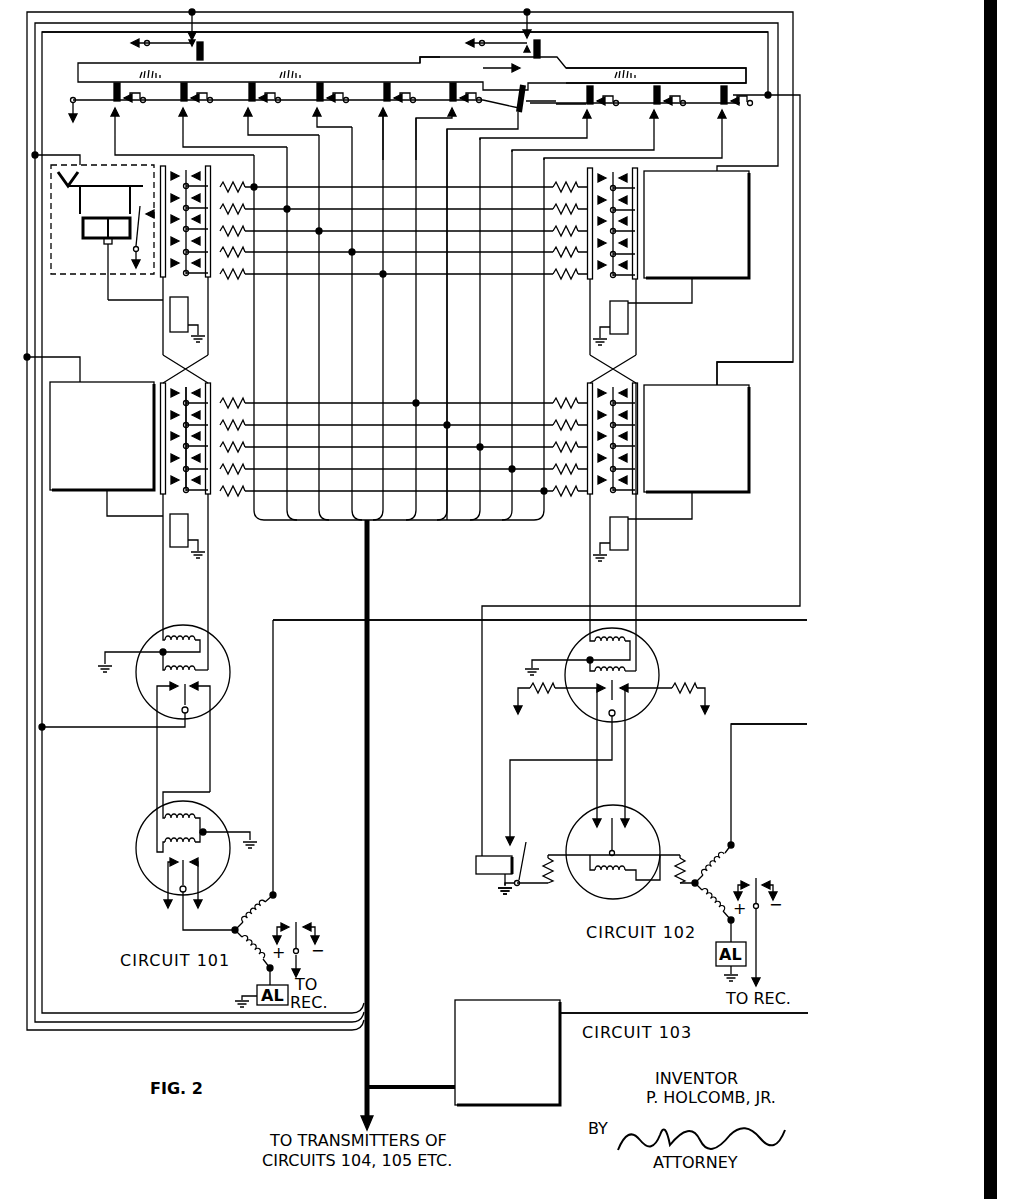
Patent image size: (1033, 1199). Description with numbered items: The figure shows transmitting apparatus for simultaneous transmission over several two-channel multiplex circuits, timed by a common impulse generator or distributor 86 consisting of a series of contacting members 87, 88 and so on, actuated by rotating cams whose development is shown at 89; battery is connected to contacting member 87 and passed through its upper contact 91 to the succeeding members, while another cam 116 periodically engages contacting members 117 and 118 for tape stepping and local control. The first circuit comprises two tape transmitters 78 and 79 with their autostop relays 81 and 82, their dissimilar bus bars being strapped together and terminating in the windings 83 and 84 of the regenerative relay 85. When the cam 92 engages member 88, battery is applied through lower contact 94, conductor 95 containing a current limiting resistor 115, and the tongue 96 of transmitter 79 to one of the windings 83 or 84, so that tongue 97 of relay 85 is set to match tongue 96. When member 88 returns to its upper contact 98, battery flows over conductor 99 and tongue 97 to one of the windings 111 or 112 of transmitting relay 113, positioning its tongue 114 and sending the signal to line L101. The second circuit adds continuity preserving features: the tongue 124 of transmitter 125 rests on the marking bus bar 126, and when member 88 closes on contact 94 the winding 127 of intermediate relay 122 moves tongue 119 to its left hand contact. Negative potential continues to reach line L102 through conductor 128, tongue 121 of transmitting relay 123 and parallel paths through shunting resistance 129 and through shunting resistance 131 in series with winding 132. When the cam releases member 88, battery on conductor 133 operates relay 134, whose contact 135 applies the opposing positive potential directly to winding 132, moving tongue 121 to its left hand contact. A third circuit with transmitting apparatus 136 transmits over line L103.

The tape transmitter 78 is at (212, 283).
The tape transmitter 79 is at (214, 378).
The autostop relay 81 is at (84, 282).
The autostop relay 82 is at (92, 492).
The winding 83 is at (178, 638).
The winding 84 is at (200, 669).
The regenerative relay 85 is at (226, 692).
The impulse generator or distributor 86 is at (351, 57).
The contacting member 87 is at (88, 103).
The contacting member 88 is at (524, 110).
The cam development 89 is at (588, 72).
The upper contact 91 is at (130, 96).
The cam 92 is at (536, 96).
The lower contact 94 is at (516, 110).
The conductor 95 is at (425, 412).
The tongue 96 is at (186, 417).
The tongue 97 is at (183, 704).
The upper contact 98 is at (530, 102).
The conductor 99 is at (668, 33).
The winding 111 is at (197, 816).
The winding 112 is at (200, 844).
The transmitting relay 113 is at (137, 850).
The tongue 114 is at (181, 878).
The current limiting resistor 115 is at (236, 486).
The cam 116 is at (432, 62).
The contacting member 117 is at (204, 46).
The contacting member 118 is at (542, 46).
The tongue 119 is at (620, 702).
The tongue 121 is at (622, 840).
The intermediate relay 122 is at (632, 655).
The transmitting relay 123 is at (630, 892).
The tongue 124 is at (644, 403).
The transmitter 125 is at (587, 384).
The marking bus bar 126 is at (641, 386).
The winding 127 is at (626, 672).
The conductor 128 is at (627, 774).
The shunting resistance 129 is at (686, 868).
The shunting resistance 131 is at (537, 838).
The winding 132 is at (592, 878).
The conductor 133 is at (793, 370).
The relay 134 is at (476, 868).
The contact 135 is at (510, 848).
The transmitting apparatus 136 is at (478, 1008).
The line L101 is at (750, 622).
The line L102 is at (750, 726).
The line L103 is at (750, 1015).